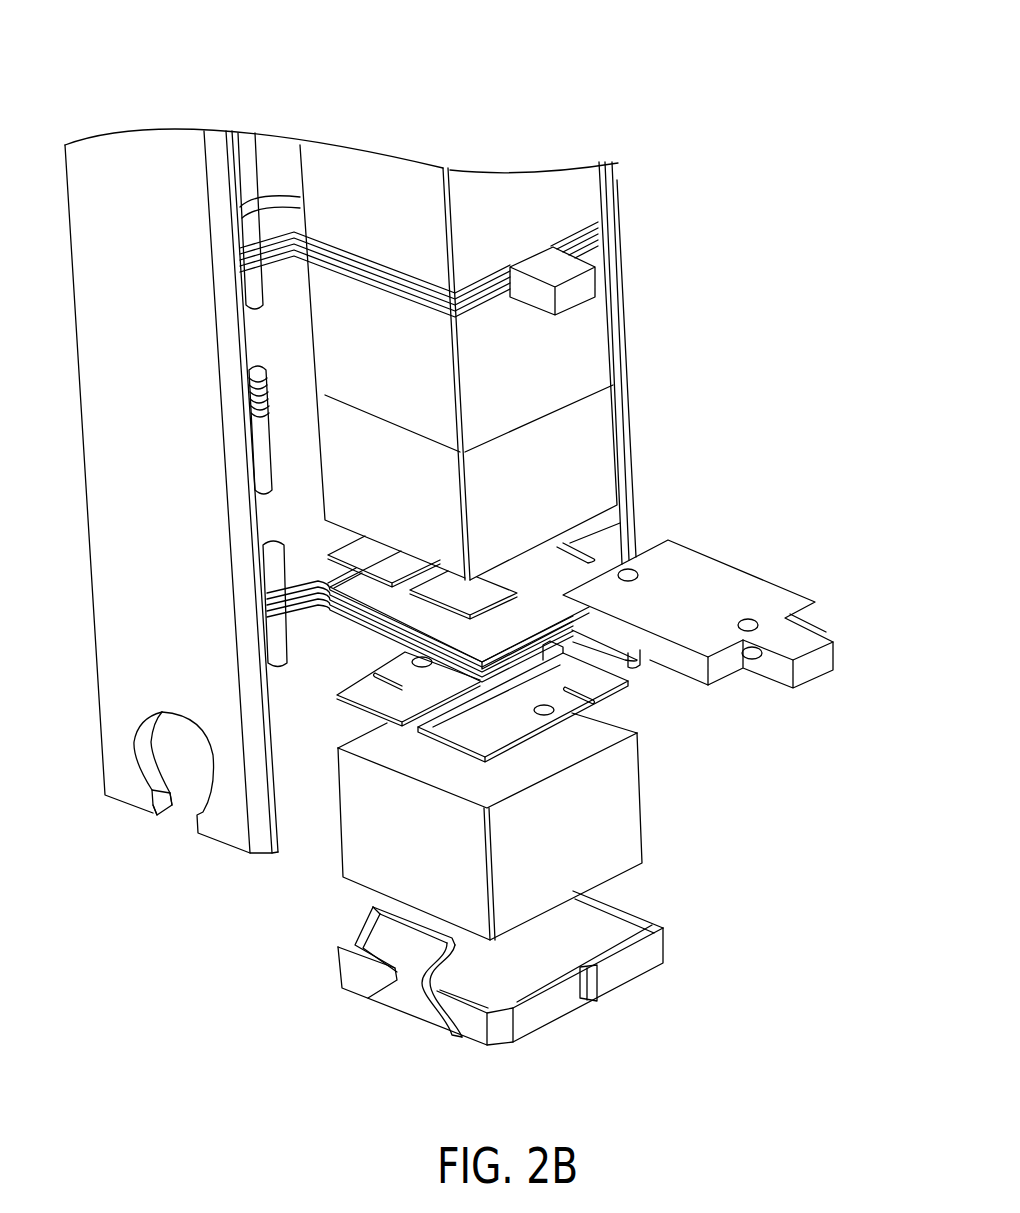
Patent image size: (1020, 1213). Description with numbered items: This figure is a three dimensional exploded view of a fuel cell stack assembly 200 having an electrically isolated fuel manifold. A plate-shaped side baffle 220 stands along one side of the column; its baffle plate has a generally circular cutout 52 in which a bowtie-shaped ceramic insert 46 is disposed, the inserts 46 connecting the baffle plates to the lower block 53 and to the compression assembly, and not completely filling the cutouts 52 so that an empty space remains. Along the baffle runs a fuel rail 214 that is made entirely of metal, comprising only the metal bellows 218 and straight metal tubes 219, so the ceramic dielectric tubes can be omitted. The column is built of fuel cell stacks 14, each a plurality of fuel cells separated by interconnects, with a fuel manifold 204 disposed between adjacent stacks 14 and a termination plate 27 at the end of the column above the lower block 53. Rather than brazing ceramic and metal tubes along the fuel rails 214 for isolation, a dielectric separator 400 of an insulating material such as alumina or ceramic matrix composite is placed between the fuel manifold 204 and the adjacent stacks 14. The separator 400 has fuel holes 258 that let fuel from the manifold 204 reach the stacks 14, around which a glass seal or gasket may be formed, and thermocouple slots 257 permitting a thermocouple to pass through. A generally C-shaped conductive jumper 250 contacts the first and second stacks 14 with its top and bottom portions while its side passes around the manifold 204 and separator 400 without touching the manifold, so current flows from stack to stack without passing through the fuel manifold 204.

The fuel cell stack assembly 200 is at (461, 549).
The fuel rail 214 is at (420, 457).
The fuel cell stack 14 is at (442, 551).
The straight metal tube 219 is at (217, 352).
The metal bellows 218 is at (221, 400).
The side baffle 220 is at (330, 511).
The fuel manifold 204 is at (400, 452).
The thermocouple slot 257 is at (334, 649).
The fuel hole 258 is at (570, 741).
The dielectric separator 400 is at (643, 739).
The jumper 250 is at (722, 614).
The cutout 52 is at (129, 830).
The termination plate 27 is at (381, 947).
The ceramic insert 46 is at (496, 977).
The lower block 53 is at (604, 1004).